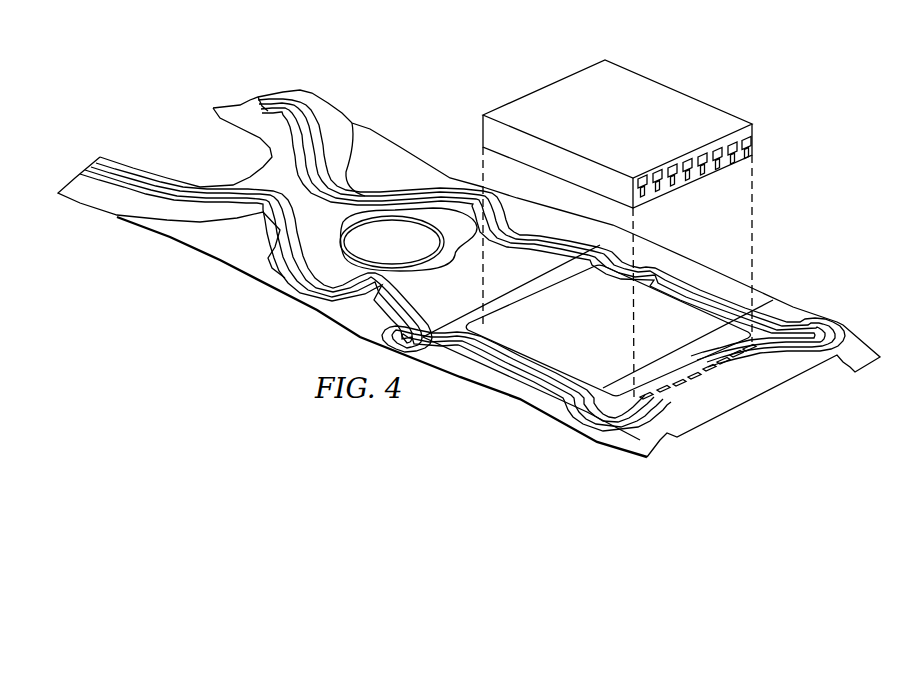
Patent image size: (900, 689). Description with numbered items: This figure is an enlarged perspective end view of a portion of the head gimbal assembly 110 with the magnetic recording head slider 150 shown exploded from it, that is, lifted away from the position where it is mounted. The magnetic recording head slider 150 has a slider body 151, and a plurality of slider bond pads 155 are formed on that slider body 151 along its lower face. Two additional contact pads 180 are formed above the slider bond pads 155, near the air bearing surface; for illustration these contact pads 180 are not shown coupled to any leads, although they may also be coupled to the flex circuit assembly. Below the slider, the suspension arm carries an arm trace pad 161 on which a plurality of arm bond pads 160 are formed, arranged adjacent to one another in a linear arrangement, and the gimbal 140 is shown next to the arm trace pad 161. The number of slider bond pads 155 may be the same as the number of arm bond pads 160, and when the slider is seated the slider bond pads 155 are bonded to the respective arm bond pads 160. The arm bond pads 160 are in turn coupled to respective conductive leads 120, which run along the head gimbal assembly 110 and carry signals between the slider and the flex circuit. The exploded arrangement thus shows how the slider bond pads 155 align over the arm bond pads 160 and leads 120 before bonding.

The head gimbal assembly 110 is at (279, 316).
The leads 120 is at (843, 330).
The gimbal 140 is at (523, 312).
The magnetic recording head slider 150 is at (660, 95).
The slider body 151 is at (550, 92).
The slider bond pads 155 is at (708, 173).
The arm bond pads 160 is at (708, 367).
The arm trace pad 161 is at (722, 393).
The contact pads 180 is at (643, 176).